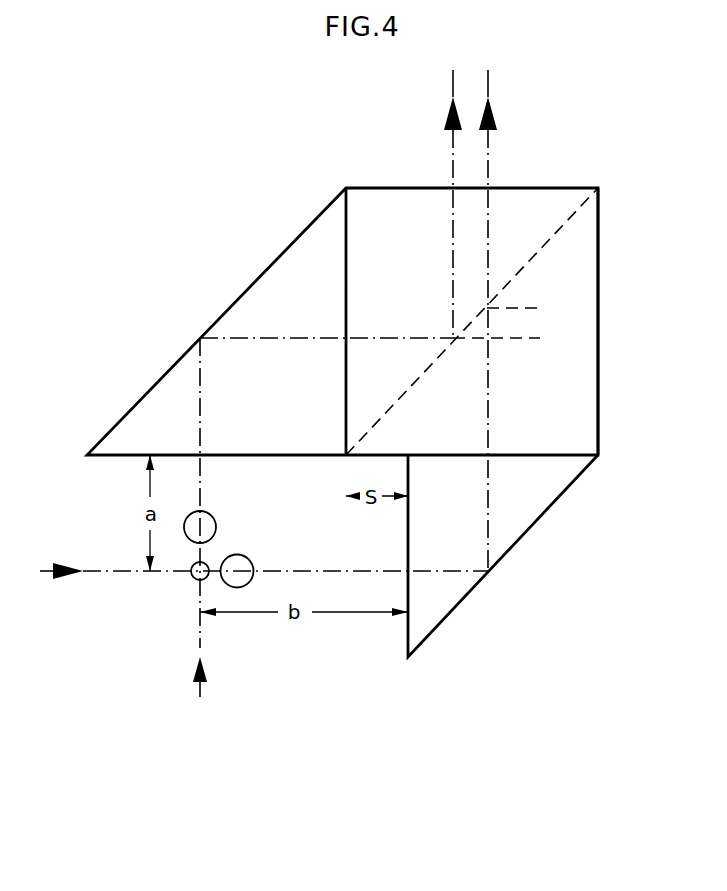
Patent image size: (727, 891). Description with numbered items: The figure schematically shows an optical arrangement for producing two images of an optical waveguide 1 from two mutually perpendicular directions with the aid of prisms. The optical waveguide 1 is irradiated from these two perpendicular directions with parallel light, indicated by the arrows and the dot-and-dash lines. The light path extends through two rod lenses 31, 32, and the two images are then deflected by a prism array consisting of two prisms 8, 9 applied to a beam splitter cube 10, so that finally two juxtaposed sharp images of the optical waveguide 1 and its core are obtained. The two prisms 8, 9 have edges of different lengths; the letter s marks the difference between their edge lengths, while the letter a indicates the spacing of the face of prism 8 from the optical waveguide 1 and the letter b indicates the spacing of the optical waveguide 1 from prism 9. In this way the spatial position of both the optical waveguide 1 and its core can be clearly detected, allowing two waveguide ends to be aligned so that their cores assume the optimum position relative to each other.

The optical waveguide 1 is at (193, 582).
The rod lens 31 is at (214, 521).
The rod lens 32 is at (252, 560).
The prism 8 is at (226, 325).
The prism 9 is at (515, 530).
The beam splitter cube 10 is at (598, 354).